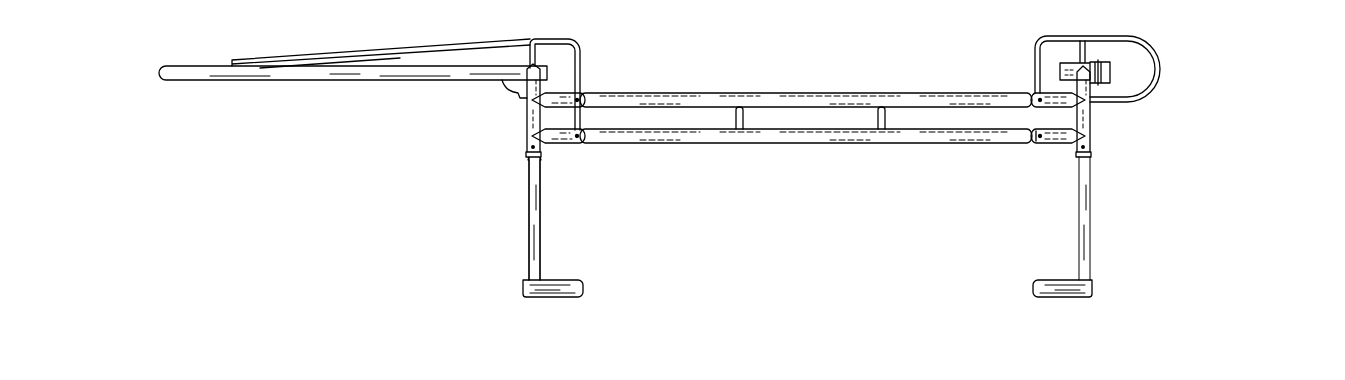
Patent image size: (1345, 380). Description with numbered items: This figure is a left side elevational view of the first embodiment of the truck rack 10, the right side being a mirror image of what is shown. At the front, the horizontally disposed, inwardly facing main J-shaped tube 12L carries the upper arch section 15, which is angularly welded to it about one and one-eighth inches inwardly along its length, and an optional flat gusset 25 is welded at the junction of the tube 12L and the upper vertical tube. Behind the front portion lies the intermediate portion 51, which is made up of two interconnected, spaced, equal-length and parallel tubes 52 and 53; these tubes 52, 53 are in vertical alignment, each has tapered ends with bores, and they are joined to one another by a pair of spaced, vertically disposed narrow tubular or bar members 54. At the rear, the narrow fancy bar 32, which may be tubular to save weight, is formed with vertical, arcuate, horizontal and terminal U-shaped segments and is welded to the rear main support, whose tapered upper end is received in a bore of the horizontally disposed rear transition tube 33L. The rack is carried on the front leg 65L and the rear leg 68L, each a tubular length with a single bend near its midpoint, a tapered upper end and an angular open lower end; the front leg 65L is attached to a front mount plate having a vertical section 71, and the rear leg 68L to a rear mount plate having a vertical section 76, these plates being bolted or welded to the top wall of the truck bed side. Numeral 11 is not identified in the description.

The truck rack 10 is at (1142, 130).
The platform 11 is at (395, 133).
The main J-shaped tube 12L is at (333, 80).
The upper arch section 15 is at (358, 38).
The flat gusset 25 is at (518, 83).
The fancy bar 32 is at (1170, 53).
The rear transition tube 33L is at (1062, 150).
The intermediate portion 51 is at (703, 62).
The tube 52 is at (838, 93).
The tube 53 is at (840, 145).
The narrow tubular or bar members 54 is at (736, 119).
The front leg 65L is at (545, 205).
The rear leg 68L is at (1092, 225).
The vertical section 71 is at (565, 293).
The vertical section 76 is at (1045, 292).